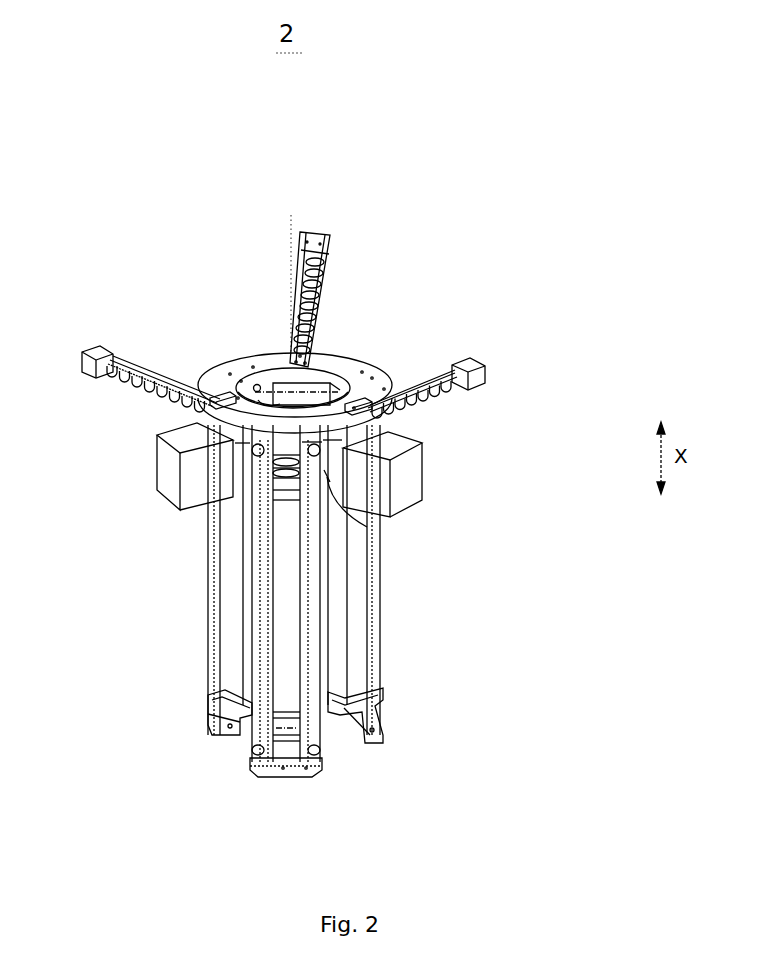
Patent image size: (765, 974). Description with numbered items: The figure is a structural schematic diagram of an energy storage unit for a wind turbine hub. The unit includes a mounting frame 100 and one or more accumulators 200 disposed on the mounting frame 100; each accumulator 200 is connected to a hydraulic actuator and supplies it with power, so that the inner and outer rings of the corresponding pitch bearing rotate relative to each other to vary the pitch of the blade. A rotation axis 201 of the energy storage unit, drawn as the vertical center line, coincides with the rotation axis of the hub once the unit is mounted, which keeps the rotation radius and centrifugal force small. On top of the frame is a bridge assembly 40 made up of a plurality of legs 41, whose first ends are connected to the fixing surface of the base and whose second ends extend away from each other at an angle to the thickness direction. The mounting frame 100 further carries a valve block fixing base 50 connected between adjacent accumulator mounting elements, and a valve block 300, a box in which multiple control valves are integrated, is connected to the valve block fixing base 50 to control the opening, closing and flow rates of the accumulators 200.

The mounting frame 100 is at (327, 565).
The accumulator 200 is at (228, 650).
The rotation axis 201 is at (290, 232).
The valve block 300 is at (163, 465).
The bridge assembly 40 is at (283, 325).
The leg 41 is at (340, 296).
The valve block fixing base 50 is at (367, 527).